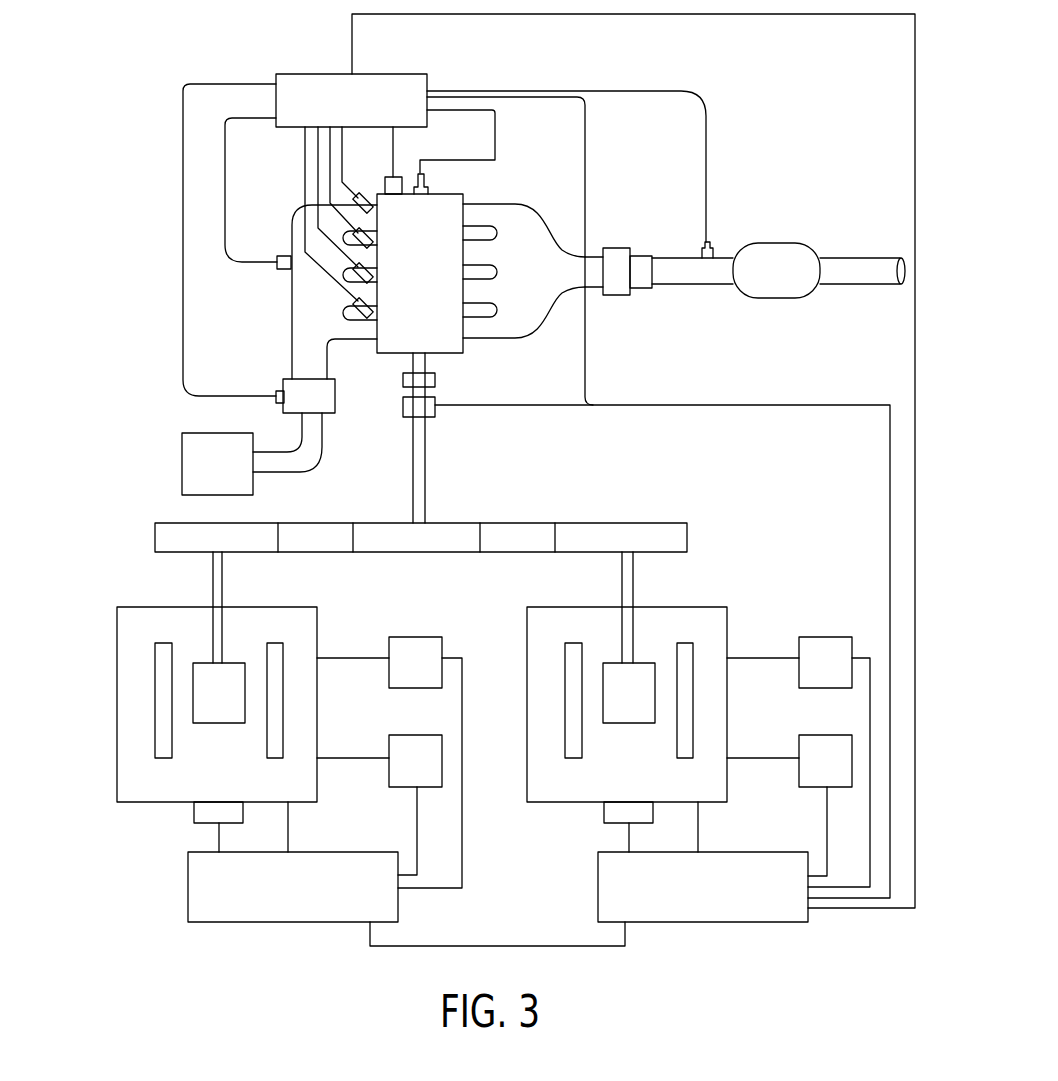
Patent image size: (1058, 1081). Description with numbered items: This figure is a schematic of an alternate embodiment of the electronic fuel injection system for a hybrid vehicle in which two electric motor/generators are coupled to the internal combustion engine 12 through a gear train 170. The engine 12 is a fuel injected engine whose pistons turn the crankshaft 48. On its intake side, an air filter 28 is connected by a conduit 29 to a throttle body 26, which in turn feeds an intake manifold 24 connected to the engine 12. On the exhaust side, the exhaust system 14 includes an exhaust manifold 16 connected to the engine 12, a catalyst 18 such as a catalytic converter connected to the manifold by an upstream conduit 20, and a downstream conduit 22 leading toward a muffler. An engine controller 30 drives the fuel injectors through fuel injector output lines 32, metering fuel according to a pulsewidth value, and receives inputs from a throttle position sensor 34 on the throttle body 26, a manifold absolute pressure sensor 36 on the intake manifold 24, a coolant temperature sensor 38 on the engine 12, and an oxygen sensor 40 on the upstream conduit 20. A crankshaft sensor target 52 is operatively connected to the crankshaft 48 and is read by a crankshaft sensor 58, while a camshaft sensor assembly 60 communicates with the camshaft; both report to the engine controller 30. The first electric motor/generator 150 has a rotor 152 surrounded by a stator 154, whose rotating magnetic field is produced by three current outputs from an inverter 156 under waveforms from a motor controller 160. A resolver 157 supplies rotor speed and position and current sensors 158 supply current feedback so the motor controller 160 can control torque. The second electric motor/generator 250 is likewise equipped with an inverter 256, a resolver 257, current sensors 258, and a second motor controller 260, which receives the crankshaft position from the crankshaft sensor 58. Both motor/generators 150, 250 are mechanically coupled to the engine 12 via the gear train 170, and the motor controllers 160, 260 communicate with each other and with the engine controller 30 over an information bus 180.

The internal combustion engine 12 is at (455, 356).
The exhaust system 14 is at (693, 287).
The exhaust manifold 16 is at (548, 255).
The catalyst 18 is at (792, 288).
The upstream conduit 20 is at (670, 267).
The downstream conduit 22 is at (890, 280).
The intake manifold 24 is at (300, 317).
The throttle body 26 is at (290, 407).
The air filter 28 is at (181, 465).
The conduit 29 is at (310, 438).
The engine controller 30 is at (409, 86).
The fuel injector output lines 32 is at (377, 208).
The throttle position sensor 34 is at (276, 392).
The manifold absolute pressure (MAP) sensor 36 is at (282, 256).
The coolant temperature sensor 38 is at (428, 193).
The oxygen sensor 40 is at (710, 242).
The crankshaft 48 is at (413, 452).
The crankshaft sensor target 52 is at (403, 378).
The crankshaft sensor 58 is at (430, 417).
The camshaft sensor assembly 60 is at (392, 185).
The first electric motor/generator 150 is at (285, 617).
The rotor 152 is at (222, 723).
The stator 154 is at (161, 672).
The inverter 156 is at (420, 637).
The resolver 157 is at (193, 810).
The current sensors 158 is at (400, 735).
The motor controller 160 is at (308, 922).
The gear train 170 is at (518, 521).
The information bus 180 is at (915, 356).
The second electric motor/generator 250 is at (695, 617).
The inverter 256 is at (830, 637).
The resolver 257 is at (603, 810).
The current sensors 258 is at (810, 735).
The second motor controller 260 is at (718, 922).